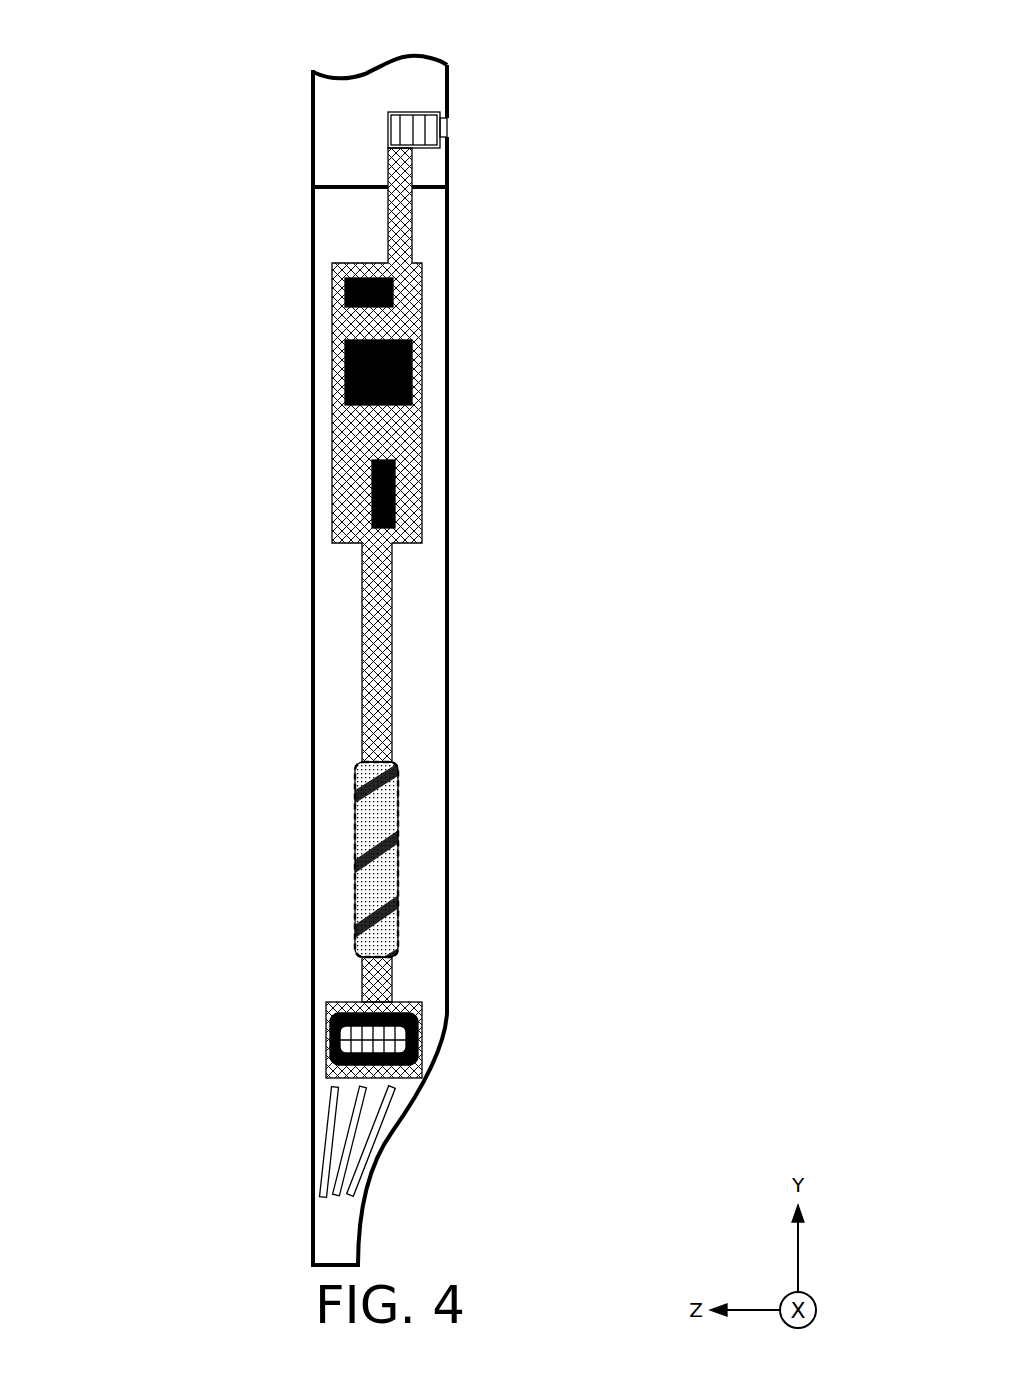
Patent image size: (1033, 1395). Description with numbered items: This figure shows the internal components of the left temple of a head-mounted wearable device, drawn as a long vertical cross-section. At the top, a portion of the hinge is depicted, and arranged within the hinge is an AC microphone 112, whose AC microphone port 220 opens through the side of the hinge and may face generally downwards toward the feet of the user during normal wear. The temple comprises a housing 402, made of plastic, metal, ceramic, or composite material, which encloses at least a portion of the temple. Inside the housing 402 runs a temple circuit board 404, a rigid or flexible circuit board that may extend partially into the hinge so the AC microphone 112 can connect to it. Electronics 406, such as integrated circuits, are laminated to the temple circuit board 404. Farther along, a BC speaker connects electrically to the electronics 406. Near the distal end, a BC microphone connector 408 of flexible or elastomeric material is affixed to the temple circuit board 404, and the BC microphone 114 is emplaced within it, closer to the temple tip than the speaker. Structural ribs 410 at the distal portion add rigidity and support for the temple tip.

The temple circuit board 404 is at (239, 575).
The electronics 406 is at (397, 373).
The housing 402 is at (297, 665).
The AC microphone 112 is at (425, 115).
The AC microphone port 220 is at (594, 147).
The BC microphone connector 408 is at (412, 999).
The BC microphone 114 is at (518, 1010).
The structural ribs 410 is at (237, 1132).